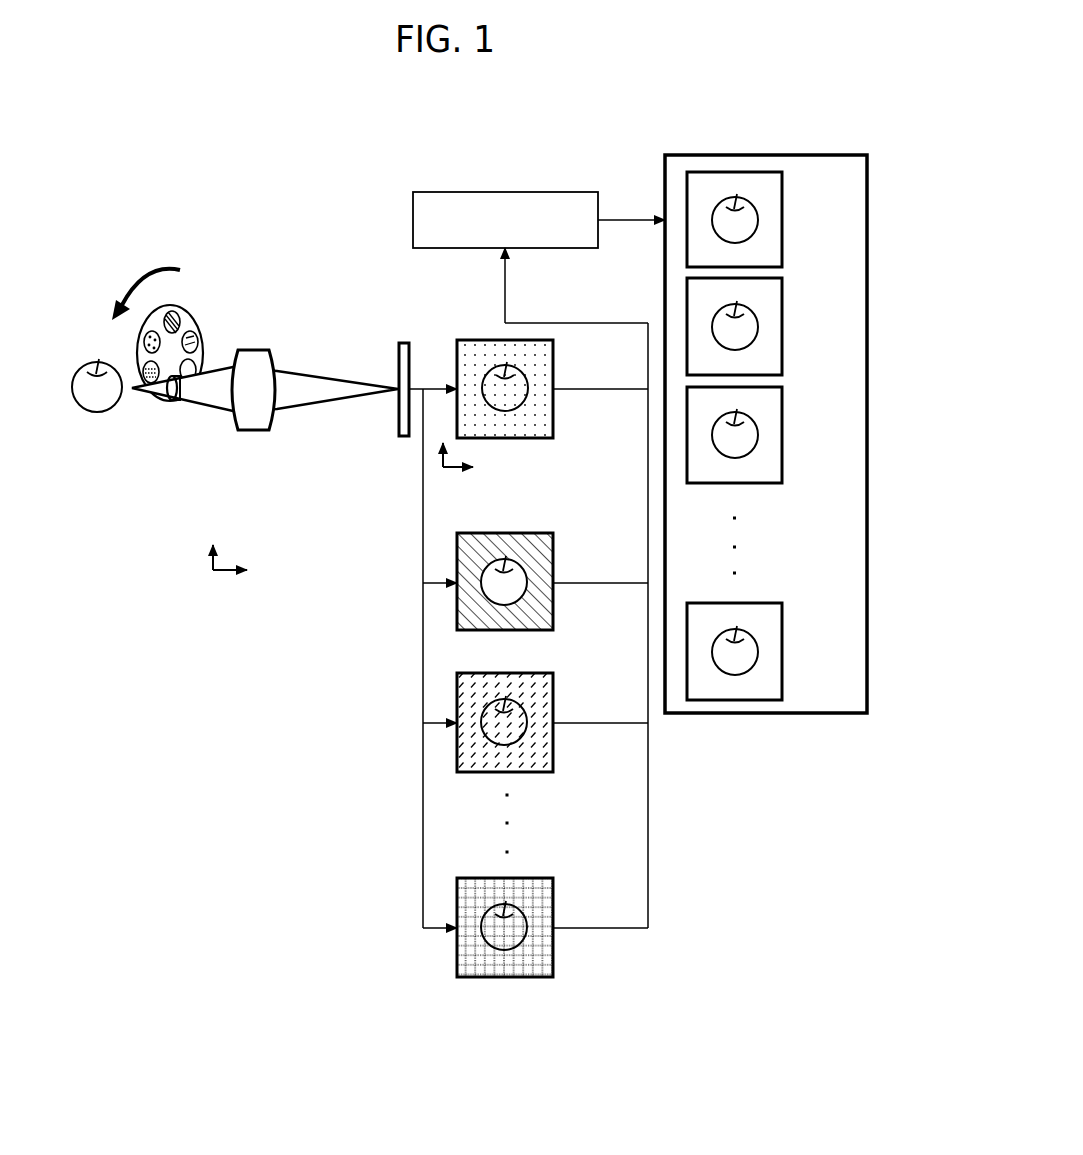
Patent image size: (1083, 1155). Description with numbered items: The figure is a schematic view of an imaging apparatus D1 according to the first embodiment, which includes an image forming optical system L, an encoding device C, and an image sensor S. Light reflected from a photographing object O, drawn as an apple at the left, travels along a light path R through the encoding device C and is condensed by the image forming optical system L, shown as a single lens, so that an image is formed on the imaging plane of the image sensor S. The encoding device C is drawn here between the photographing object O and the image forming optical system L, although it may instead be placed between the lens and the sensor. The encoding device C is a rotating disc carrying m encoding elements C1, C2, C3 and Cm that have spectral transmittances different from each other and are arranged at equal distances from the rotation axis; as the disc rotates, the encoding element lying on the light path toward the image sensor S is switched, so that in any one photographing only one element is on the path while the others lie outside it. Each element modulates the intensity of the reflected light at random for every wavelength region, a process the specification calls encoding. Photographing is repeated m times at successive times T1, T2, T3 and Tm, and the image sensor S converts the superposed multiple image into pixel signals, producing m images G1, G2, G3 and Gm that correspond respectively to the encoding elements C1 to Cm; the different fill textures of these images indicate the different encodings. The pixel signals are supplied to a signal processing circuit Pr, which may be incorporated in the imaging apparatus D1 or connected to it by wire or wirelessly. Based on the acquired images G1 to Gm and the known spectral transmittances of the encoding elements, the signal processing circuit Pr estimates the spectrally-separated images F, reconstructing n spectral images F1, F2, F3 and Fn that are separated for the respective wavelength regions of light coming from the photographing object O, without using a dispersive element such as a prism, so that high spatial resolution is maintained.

The imaging apparatus D1 is at (127, 178).
The photographing object O is at (72, 389).
The encoding device C is at (168, 310).
The encoding element C1 is at (145, 337).
The encoding element C2 is at (177, 320).
The encoding element C3 is at (205, 343).
The encoding element Cm is at (152, 393).
The light ray R is at (321, 366).
The image forming optical system L is at (251, 431).
The image sensor S is at (404, 437).
The signal processing circuit Pr is at (506, 191).
The first time T1 is at (517, 372).
The second time T2 is at (517, 565).
The third time T3 is at (517, 706).
The m-th time Tm is at (519, 911).
The image G1 is at (553, 363).
The image G2 is at (553, 555).
The image G3 is at (553, 695).
The image Gm is at (553, 900).
The spectrally-separated images F is at (766, 155).
The spectral image F1 is at (782, 218).
The spectral image F2 is at (782, 321).
The spectral image F3 is at (782, 431).
The spectral image Fn is at (782, 646).